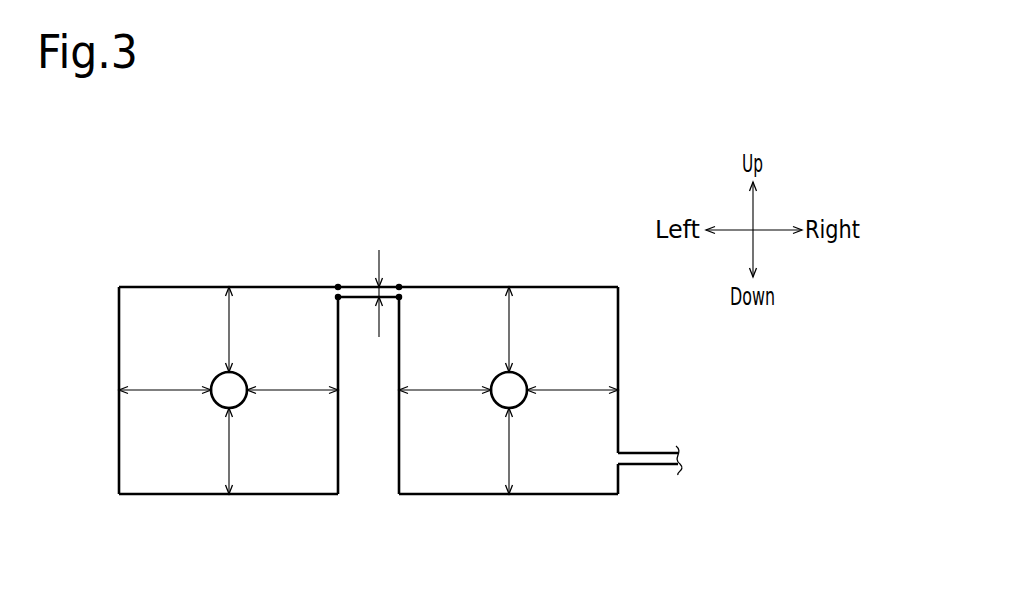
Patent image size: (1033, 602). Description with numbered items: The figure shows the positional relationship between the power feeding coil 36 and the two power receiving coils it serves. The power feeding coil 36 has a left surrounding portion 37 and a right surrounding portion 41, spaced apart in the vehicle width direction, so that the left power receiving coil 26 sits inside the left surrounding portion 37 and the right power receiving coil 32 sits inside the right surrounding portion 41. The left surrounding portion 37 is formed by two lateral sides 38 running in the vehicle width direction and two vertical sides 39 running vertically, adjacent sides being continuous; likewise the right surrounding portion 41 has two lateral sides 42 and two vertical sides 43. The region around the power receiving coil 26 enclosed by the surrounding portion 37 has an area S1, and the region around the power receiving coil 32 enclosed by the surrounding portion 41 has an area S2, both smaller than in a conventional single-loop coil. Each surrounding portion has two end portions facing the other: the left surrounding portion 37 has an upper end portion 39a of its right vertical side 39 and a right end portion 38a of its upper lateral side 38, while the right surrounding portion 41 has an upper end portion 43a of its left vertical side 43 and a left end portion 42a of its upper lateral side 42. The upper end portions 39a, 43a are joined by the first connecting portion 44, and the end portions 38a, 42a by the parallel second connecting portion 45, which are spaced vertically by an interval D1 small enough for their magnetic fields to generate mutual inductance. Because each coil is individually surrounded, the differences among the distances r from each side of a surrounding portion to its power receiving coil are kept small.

The power feeding coil 36 is at (373, 328).
The left surrounding portion 37 is at (210, 379).
The lateral side 38 is at (143, 287).
The right end portion 38a is at (336, 285).
The vertical side 39 is at (118, 451).
The upper end portion 39a is at (336, 299).
The right surrounding portion 41 is at (530, 379).
The lateral side 42 is at (574, 287).
The left end portion 42a is at (401, 286).
The vertical side 43 is at (619, 347).
The upper end portion 43a is at (401, 299).
The first connecting portion 44 is at (350, 300).
The second connecting portion 45 is at (349, 286).
The left power receiving coil 26 is at (213, 407).
The right power receiving coil 32 is at (524, 407).
The area S1 is at (137, 318).
The area S2 is at (608, 300).
The interval D1 is at (383, 285).
The distance r is at (228, 337).